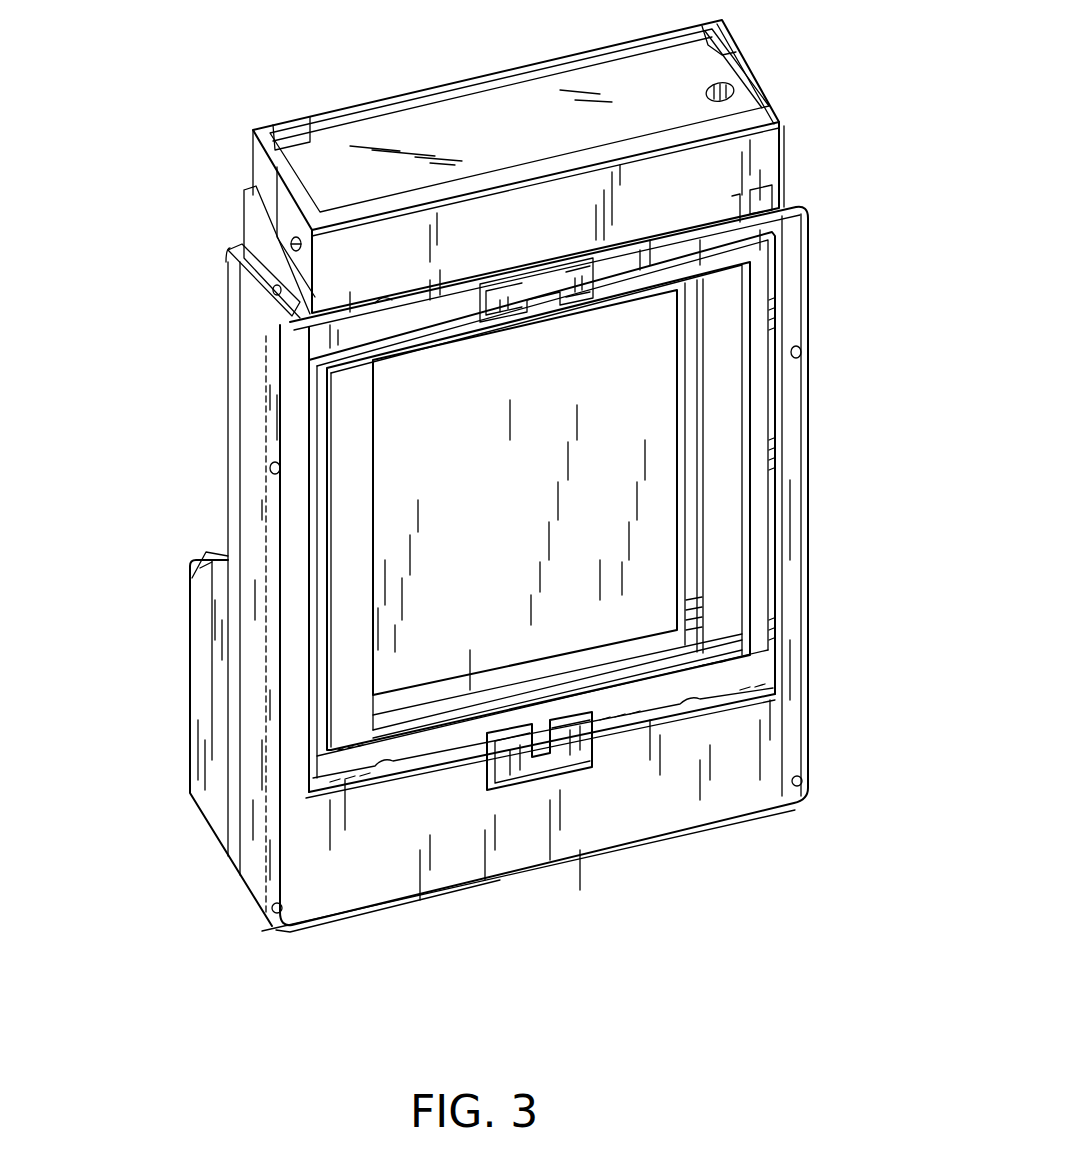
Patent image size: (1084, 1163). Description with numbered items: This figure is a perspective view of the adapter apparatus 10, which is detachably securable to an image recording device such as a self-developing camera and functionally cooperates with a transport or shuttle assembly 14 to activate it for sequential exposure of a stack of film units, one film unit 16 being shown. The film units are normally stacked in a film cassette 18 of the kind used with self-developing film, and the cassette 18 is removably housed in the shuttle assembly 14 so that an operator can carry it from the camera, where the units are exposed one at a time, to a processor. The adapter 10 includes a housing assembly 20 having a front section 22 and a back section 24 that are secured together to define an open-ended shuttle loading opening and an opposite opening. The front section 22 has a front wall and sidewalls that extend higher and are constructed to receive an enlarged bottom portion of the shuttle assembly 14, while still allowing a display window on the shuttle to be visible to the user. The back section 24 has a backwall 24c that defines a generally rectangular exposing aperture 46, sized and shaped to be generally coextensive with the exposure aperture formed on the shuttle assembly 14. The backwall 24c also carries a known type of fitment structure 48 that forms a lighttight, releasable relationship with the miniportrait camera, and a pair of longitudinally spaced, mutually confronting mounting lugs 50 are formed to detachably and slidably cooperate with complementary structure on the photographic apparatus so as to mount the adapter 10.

The adapter apparatus 10 is at (498, 476).
The shuttle assembly 14 is at (758, 80).
The film unit 16 is at (498, 524).
The film cassette 18 is at (675, 418).
The housing assembly 20 is at (505, 564).
The front section 22 is at (188, 668).
The back section 24 is at (258, 898).
The backwall 24c is at (797, 540).
The exposing aperture 46 is at (686, 614).
The fitment structure 48 is at (737, 695).
The mounting lugs 50 is at (590, 272).